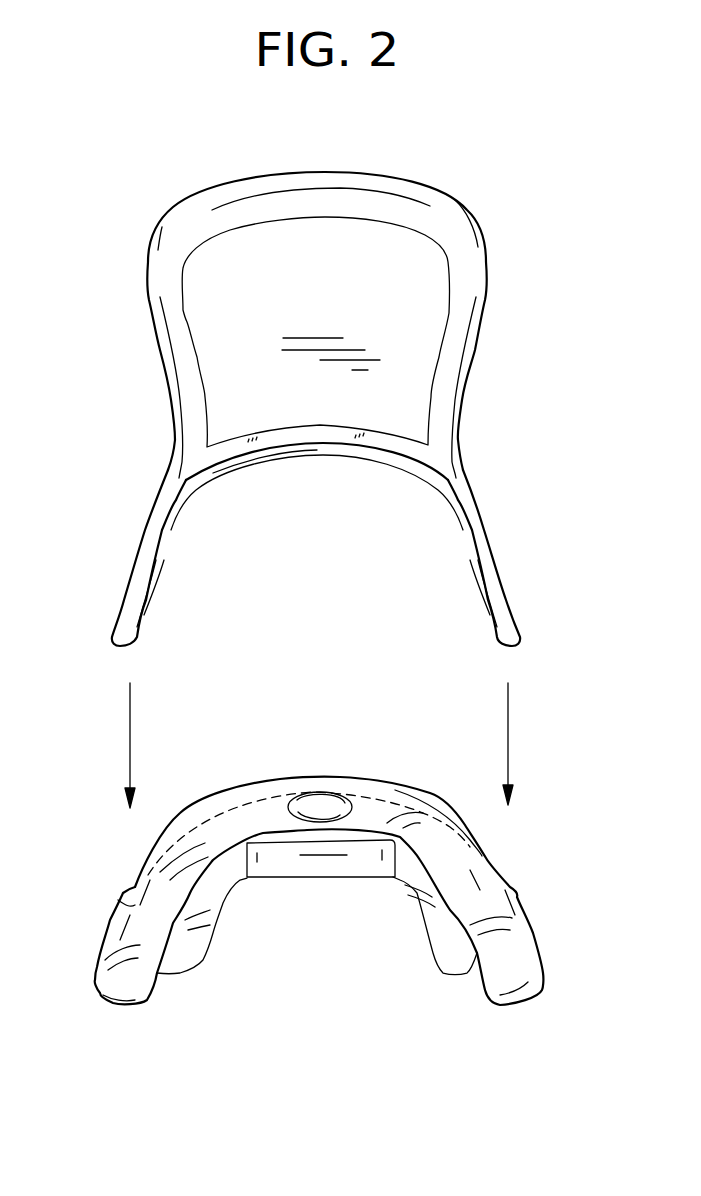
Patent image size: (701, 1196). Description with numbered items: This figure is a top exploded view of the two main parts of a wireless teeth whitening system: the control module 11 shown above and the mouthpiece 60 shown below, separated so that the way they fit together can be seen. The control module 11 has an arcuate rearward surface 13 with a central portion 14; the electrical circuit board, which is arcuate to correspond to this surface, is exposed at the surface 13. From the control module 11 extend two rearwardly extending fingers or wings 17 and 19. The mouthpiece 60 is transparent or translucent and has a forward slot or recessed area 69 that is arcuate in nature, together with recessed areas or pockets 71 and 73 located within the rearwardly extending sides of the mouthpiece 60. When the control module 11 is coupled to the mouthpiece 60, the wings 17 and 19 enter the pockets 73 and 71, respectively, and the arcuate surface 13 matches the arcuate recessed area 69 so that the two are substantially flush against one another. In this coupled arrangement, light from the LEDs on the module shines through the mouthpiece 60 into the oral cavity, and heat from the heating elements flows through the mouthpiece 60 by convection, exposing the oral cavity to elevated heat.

The control module 11 is at (325, 409).
The arcuate rearward surface 13 is at (333, 460).
The central portion 14 is at (235, 470).
The rearwardly extending finger or wing 17 is at (122, 587).
The rearwardly extending finger or wing 19 is at (512, 600).
The mouthpiece 60 is at (320, 871).
The forward slot or recessed area 69 is at (207, 810).
The recessed area or pocket 71 is at (125, 913).
The recessed area or pocket 73 is at (520, 933).